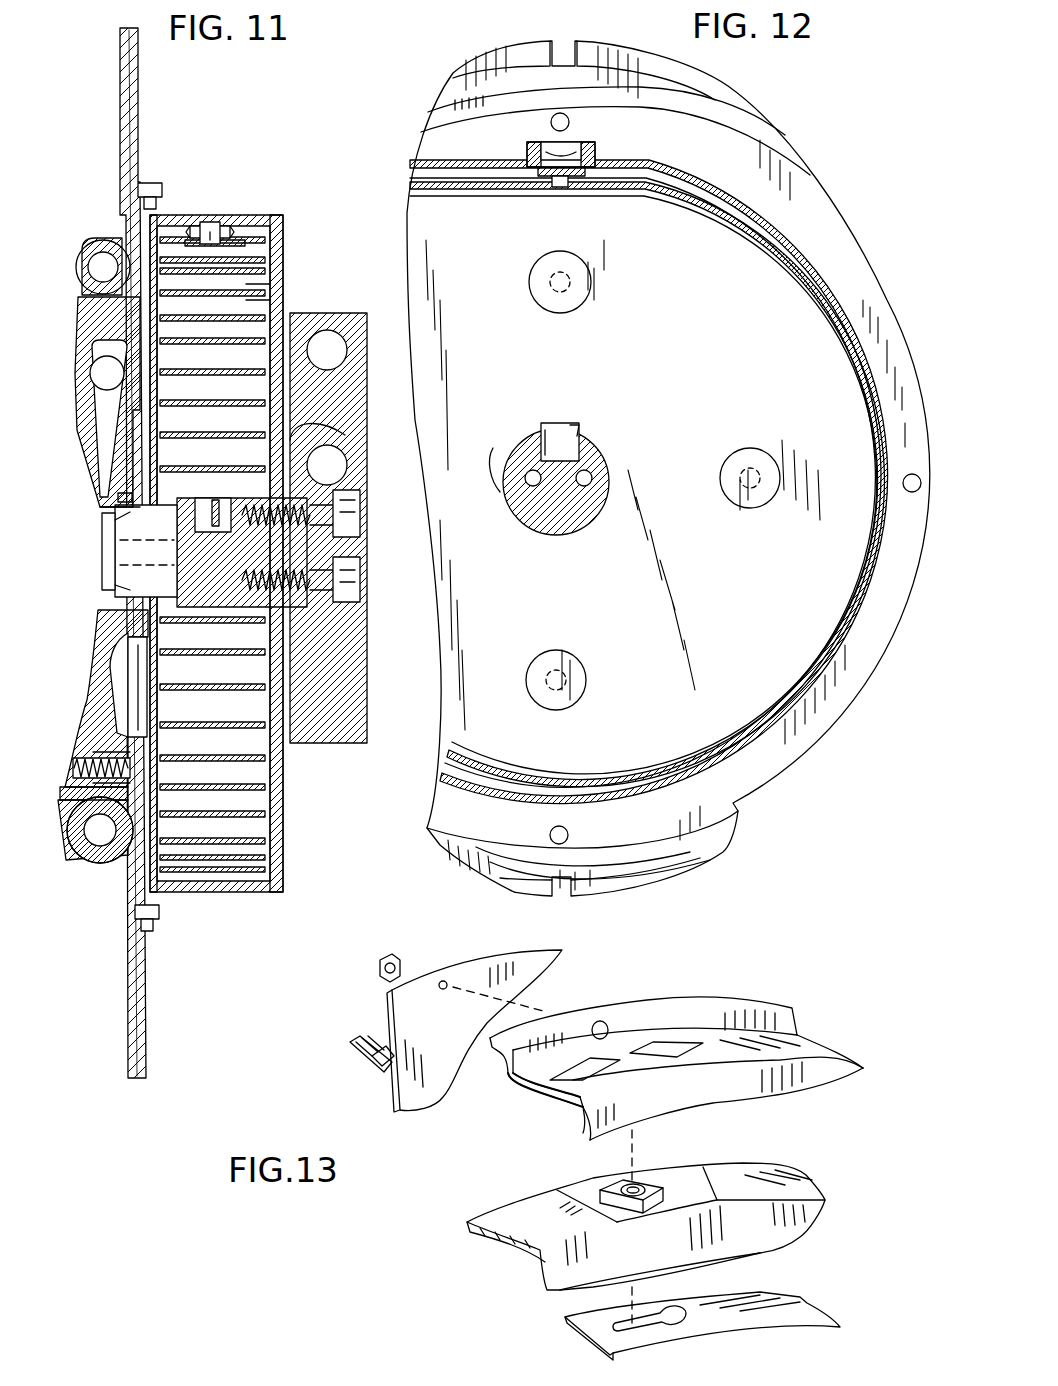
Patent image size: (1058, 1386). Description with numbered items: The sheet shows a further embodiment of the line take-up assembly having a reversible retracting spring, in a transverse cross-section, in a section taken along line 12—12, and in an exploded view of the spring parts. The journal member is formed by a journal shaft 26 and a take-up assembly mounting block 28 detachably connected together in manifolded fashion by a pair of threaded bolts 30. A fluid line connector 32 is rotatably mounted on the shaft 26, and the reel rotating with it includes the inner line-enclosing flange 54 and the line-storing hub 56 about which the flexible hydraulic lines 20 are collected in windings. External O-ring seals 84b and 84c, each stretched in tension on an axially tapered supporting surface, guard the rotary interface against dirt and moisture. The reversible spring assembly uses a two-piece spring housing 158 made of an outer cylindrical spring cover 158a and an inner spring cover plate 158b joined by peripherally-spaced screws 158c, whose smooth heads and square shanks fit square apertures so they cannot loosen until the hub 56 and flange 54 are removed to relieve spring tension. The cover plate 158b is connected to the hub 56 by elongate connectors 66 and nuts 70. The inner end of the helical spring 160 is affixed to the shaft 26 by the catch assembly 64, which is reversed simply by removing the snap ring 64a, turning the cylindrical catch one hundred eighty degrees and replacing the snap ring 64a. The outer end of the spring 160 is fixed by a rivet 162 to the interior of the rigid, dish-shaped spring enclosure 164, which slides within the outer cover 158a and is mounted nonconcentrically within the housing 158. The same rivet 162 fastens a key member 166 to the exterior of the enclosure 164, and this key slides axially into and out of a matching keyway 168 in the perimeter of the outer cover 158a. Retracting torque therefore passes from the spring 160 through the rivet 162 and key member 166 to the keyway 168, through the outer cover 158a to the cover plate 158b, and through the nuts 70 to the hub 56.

In FIG. 11, the section line 12- 12 is at (212, 150).
In FIG. 11, the flexible hydraulic lines 20 is at (104, 240).
In FIG. 11, the journal shaft 26 is at (102, 530).
In FIG. 12, the journal shaft 26 is at (608, 458).
In FIG. 11, the take-up assembly mounting block 28 is at (336, 745).
In FIG. 11, the threaded bolts 30 is at (360, 578).
In FIG. 11, the fluid line connector 32 is at (80, 330).
In FIG. 11, the inner line-enclosing flange 54 is at (138, 82).
In FIG. 12, the inner line-enclosing flange 54 is at (490, 54).
In FIG. 11, the line-storing hub 56 is at (95, 715).
In FIG. 11, the catch assembly 64 is at (206, 496).
In FIG. 12, the catch assembly 64 is at (552, 423).
In FIG. 11, the snap ring 64a is at (218, 497).
In FIG. 11, the elongate connectors 66 is at (73, 768).
In FIG. 12, the elongate connectors 66 is at (548, 278).
In FIG. 13, the elongate connectors 66 is at (354, 1056).
In FIG. 11, the nuts 70 is at (130, 710).
In FIG. 13, the nuts 70 is at (386, 1074).
In FIG. 11, the external O-ring seal 84b is at (300, 452).
In FIG. 11, the external O-ring seal 84c is at (133, 470).
In FIG. 11, the spring housing 158 is at (284, 264).
In FIG. 11, the outer cylindrical spring cover 158a is at (212, 222).
In FIG. 12, the outer cylindrical spring cover 158a is at (775, 176).
In FIG. 13, the outer cylindrical spring cover 158a is at (715, 1002).
In FIG. 11, the inner spring cover plate 158b is at (128, 302).
In FIG. 12, the inner spring cover plate 158b is at (668, 336).
In FIG. 13, the inner spring cover plate 158b is at (460, 1036).
In FIG. 11, the screws 158c is at (162, 183).
In FIG. 12, the screws 158c is at (570, 122).
In FIG. 13, the screws 158c is at (604, 1020).
In FIG. 11, the helical spring 160 is at (282, 286).
In FIG. 12, the helical spring 160 is at (700, 196).
In FIG. 13, the helical spring 160 is at (766, 1304).
In FIG. 11, the rivet 162 is at (216, 228).
In FIG. 12, the rivet 162 is at (552, 190).
In FIG. 11, the spring enclosure 164 is at (232, 880).
In FIG. 12, the spring enclosure 164 is at (790, 270).
In FIG. 13, the spring enclosure 164 is at (722, 1170).
In FIG. 11, the key member 166 is at (200, 228).
In FIG. 12, the key member 166 is at (548, 142).
In FIG. 13, the key member 166 is at (614, 1188).
In FIG. 11, the keyway 168 is at (248, 238).
In FIG. 12, the keyway 168 is at (527, 160).
In FIG. 13, the keyway 168 is at (570, 1104).